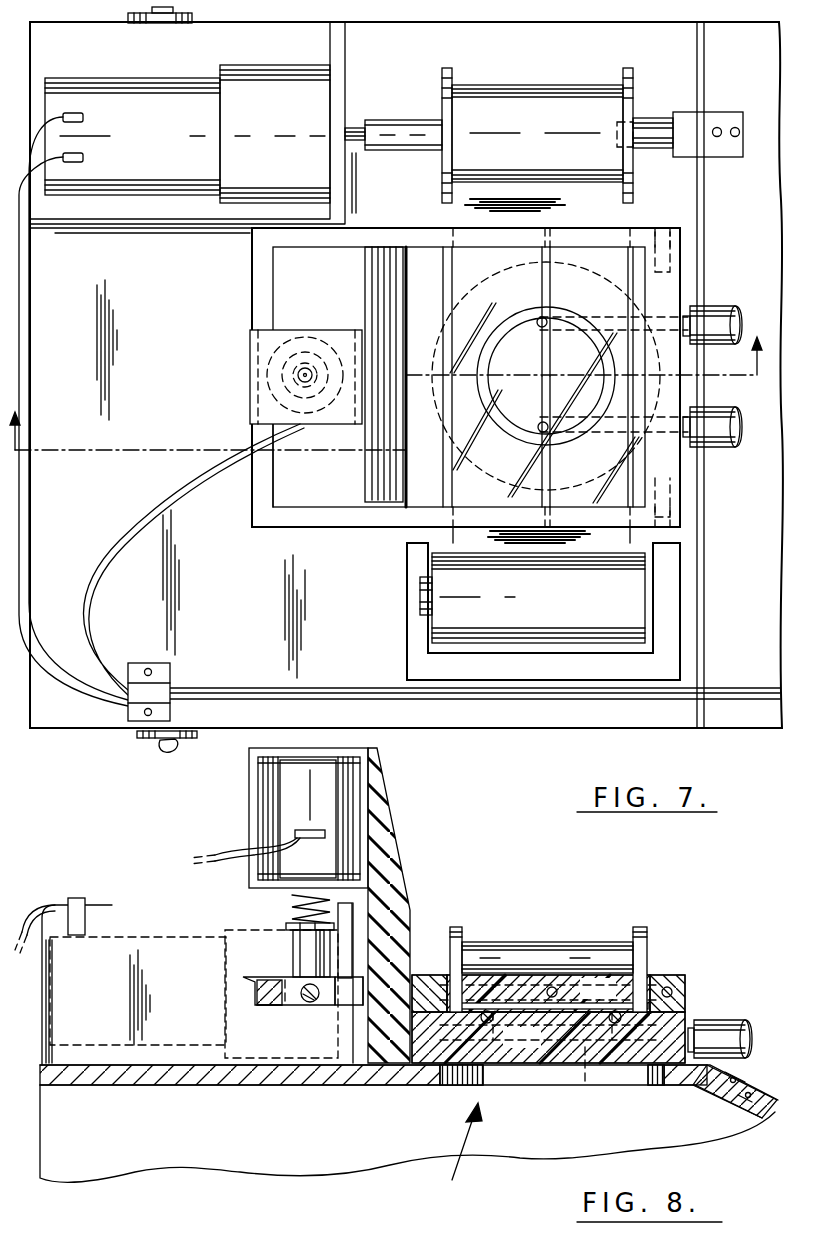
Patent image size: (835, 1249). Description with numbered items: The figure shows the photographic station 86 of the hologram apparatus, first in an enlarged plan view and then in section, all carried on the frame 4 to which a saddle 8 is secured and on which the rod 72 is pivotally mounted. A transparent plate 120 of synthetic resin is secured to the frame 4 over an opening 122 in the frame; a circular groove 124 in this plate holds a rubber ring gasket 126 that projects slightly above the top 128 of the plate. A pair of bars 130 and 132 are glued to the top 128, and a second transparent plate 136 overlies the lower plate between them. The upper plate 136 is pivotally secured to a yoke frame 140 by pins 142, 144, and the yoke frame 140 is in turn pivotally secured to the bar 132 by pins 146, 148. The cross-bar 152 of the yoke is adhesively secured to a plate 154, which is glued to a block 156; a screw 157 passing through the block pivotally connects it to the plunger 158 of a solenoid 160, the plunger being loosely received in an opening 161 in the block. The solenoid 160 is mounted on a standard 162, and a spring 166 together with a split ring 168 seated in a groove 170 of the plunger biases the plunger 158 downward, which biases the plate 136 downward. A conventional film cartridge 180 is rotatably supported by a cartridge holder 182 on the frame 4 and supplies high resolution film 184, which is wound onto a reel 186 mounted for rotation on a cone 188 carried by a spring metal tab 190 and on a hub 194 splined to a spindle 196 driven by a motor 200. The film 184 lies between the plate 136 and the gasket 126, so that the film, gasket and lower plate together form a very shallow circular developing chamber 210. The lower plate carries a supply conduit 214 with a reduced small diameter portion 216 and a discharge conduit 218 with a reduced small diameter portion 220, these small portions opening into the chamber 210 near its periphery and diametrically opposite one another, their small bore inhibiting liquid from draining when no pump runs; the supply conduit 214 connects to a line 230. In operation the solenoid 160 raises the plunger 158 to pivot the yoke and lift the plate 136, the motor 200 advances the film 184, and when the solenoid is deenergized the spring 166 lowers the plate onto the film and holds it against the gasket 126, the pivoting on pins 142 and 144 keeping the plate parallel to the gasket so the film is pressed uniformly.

In FIG. 7, the frame 4 is at (226, 597).
In FIG. 8, the frame 4 is at (175, 1085).
In FIG. 7, the saddle 8 is at (386, 379).
In FIG. 7, the rod 72 is at (158, 745).
In FIG. 8, the photographic station 86 is at (449, 1154).
In FIG. 8, the transparent plate 120 is at (648, 1083).
In FIG. 8, the opening 122 is at (620, 1085).
In FIG. 8, the circular groove 124 is at (495, 1082).
In FIG. 7, the ring gasket 126 is at (513, 318).
In FIG. 8, the ring gasket 126 is at (460, 957).
In FIG. 8, the top of plate 128 is at (688, 1000).
In FIG. 7, the bar 130 is at (420, 272).
In FIG. 8, the bar 130 is at (432, 975).
In FIG. 7, the bar 132 is at (665, 292).
In FIG. 8, the bar 132 is at (670, 975).
In FIG. 7, the transparent plate 136 is at (517, 460).
In FIG. 8, the transparent plate 136 is at (640, 957).
In FIG. 7, the yoke frame 140 is at (565, 233).
In FIG. 7, the pin 142 is at (552, 287).
In FIG. 7, the pin 144 is at (552, 467).
In FIG. 7, the pin 146 is at (670, 252).
In FIG. 7, the pin 148 is at (670, 490).
In FIG. 7, the cross-bar 152 is at (252, 284).
In FIG. 8, the cross-bar 152 is at (257, 993).
In FIG. 7, the plate 154 is at (262, 400).
In FIG. 8, the plate 154 is at (248, 748).
In FIG. 8, the block 156 is at (342, 993).
In FIG. 8, the screw 157 is at (305, 1003).
In FIG. 8, the plunger 158 is at (296, 944).
In FIG. 7, the solenoid 160 is at (307, 345).
In FIG. 8, the solenoid 160 is at (340, 775).
In FIG. 8, the opening 161 is at (270, 1008).
In FIG. 7, the standard 162 is at (383, 268).
In FIG. 8, the standard 162 is at (385, 858).
In FIG. 8, the spring 166 is at (287, 913).
In FIG. 8, the split ring 168 is at (287, 927).
In FIG. 8, the groove 170 is at (340, 942).
In FIG. 7, the film cartridge 180 is at (565, 607).
In FIG. 7, the cartridge holder 182 is at (408, 645).
In FIG. 7, the film 184 is at (465, 205).
In FIG. 8, the film 184 is at (588, 957).
In FIG. 7, the reel 186 is at (453, 72).
In FIG. 8, the reel 186 is at (455, 925).
In FIG. 7, the cone 188 is at (645, 117).
In FIG. 7, the spring metal tab 190 is at (683, 143).
In FIG. 7, the hub 194 is at (395, 123).
In FIG. 7, the spindle 196 is at (352, 127).
In FIG. 7, the motor 200 is at (180, 141).
In FIG. 8, the motor 200 is at (138, 940).
In FIG. 8, the developing chamber 210 is at (492, 1052).
In FIG. 7, the supply conduit 214 is at (556, 337).
In FIG. 8, the supply conduit 214 is at (585, 1085).
In FIG. 7, the reduced small diameter portion 216 is at (543, 328).
In FIG. 8, the reduced small diameter portion 216 is at (622, 979).
In FIG. 7, the discharge conduit 218 is at (683, 388).
In FIG. 7, the reduced small diameter portion 220 is at (541, 420).
In FIG. 8, the line 230 is at (768, 1005).